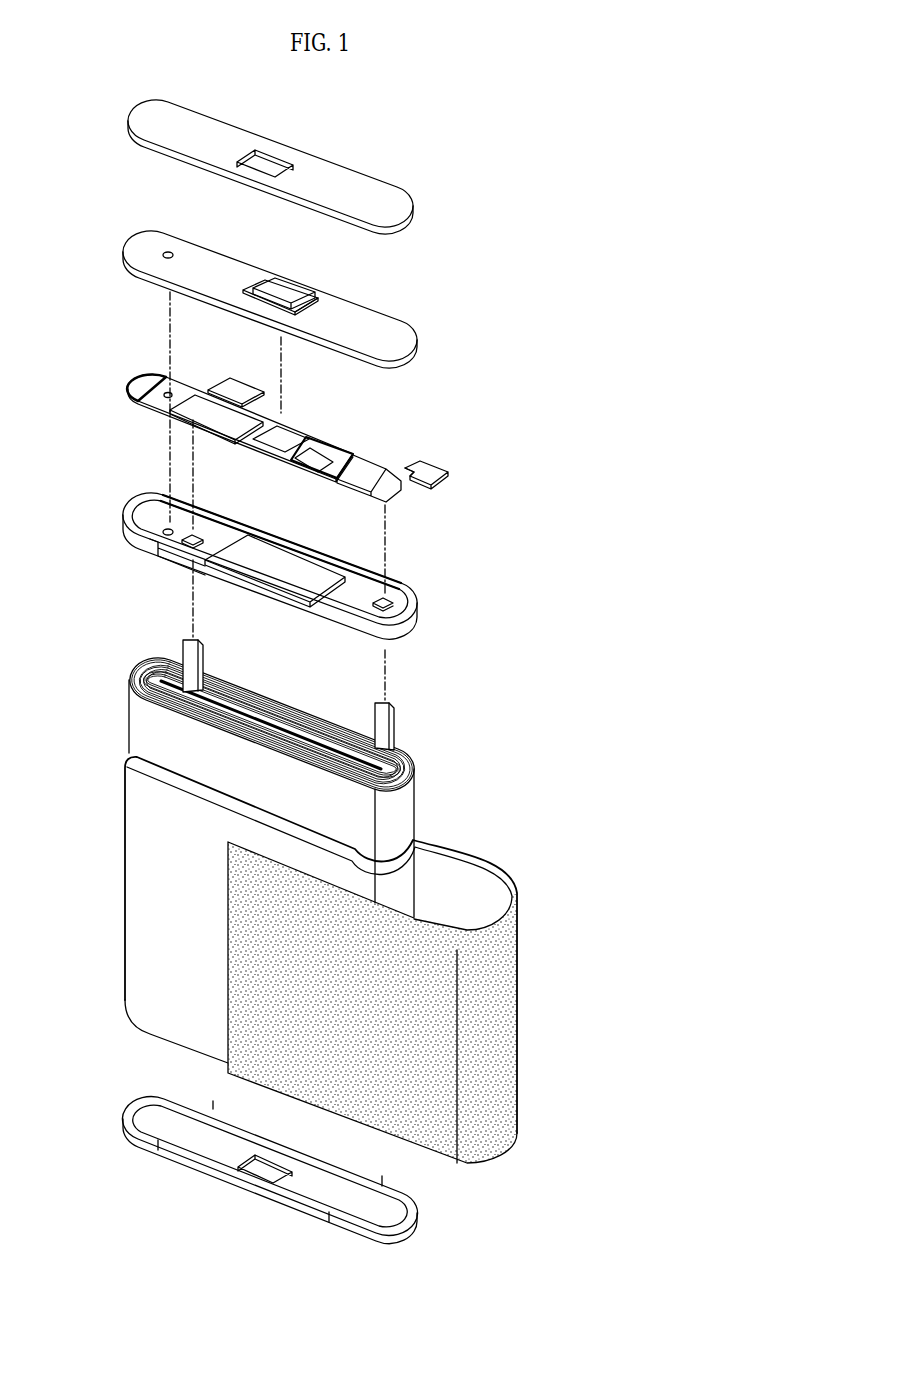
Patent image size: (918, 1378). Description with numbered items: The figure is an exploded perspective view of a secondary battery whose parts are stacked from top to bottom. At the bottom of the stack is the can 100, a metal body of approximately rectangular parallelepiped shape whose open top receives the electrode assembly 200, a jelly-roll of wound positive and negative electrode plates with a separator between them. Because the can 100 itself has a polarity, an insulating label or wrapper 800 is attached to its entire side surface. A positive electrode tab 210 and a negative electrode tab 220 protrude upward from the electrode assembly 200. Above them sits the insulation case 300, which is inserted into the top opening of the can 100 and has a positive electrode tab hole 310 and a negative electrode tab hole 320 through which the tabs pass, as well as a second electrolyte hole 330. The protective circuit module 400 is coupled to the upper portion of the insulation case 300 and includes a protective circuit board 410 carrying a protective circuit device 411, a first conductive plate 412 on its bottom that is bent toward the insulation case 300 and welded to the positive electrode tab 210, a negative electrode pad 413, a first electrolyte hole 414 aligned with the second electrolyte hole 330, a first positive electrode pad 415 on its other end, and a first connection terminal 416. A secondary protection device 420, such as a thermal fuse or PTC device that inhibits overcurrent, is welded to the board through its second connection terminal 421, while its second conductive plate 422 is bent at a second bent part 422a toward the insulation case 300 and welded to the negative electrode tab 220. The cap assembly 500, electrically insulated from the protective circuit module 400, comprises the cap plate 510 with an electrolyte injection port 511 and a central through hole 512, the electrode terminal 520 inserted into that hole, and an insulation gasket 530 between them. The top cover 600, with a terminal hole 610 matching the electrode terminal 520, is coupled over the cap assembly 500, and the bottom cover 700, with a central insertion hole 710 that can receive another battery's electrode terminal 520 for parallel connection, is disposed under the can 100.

The can 100 is at (319, 960).
The electrode assembly 200 is at (310, 755).
The positive electrode tab 210 is at (180, 645).
The negative electrode tab 220 is at (387, 702).
The insulation case 300 is at (299, 547).
The positive electrode tab hole 310 is at (198, 538).
The negative electrode tab hole 320 is at (390, 595).
The second electrolyte hole 330 is at (164, 528).
The protective circuit module 400 is at (307, 431).
The protective circuit board 410 is at (295, 462).
The protective circuit device 411 is at (192, 395).
The first conductive plate 412 is at (233, 385).
The negative electrode pad 413 is at (290, 442).
The first electrolyte hole 414 is at (162, 398).
The first positive electrode pad 415 is at (148, 388).
The first connection terminal 416 is at (317, 447).
The secondary protection device 420 is at (343, 490).
The second connection terminal 421 is at (337, 460).
The second conductive plate 422 is at (428, 470).
The second bent part 422a is at (417, 497).
The cap assembly 500 is at (317, 280).
The cap plate 510 is at (393, 337).
The electrolyte injection port 511 is at (170, 252).
The through hole 512 is at (322, 309).
The electrode terminal 520 is at (272, 293).
The insulation gasket 530 is at (312, 299).
The top cover 600 is at (314, 166).
The terminal hole 610 is at (263, 165).
The bottom cover 700 is at (318, 1170).
The insertion hole 710 is at (263, 1173).
The label or wrapper 800 is at (505, 1013).